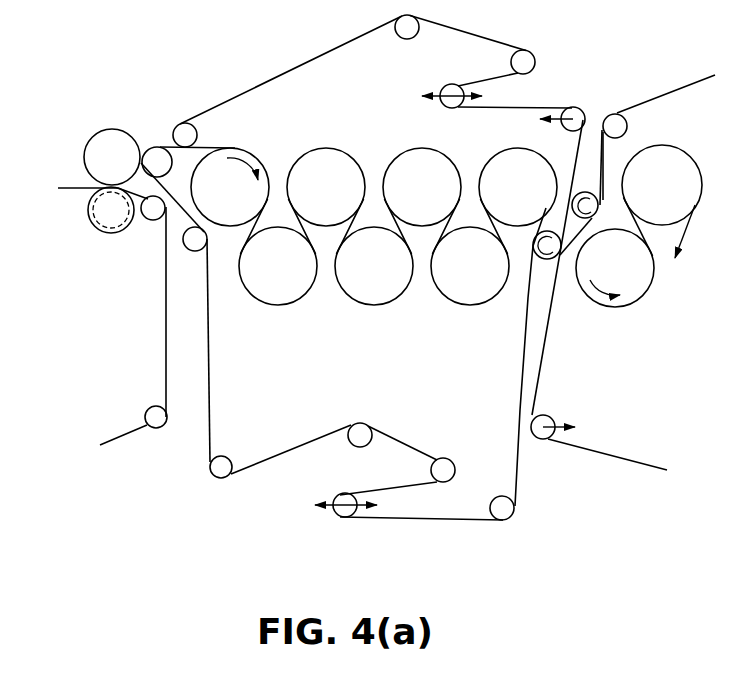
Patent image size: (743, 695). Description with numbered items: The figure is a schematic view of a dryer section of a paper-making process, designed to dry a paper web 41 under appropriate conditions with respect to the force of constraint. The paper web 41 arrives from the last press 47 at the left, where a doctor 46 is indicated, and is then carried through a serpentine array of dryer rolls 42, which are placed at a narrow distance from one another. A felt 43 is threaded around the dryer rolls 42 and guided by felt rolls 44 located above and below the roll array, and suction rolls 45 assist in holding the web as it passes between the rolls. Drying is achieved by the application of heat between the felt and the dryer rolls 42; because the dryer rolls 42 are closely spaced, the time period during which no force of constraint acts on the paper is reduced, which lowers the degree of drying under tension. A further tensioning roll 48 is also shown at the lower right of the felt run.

The paper web 41 is at (60, 187).
The dryer rolls 42 is at (228, 228).
The felt 43 is at (267, 80).
The felt rolls 44 is at (399, 39).
The suction rolls 45 is at (158, 158).
The doctor 46 is at (144, 134).
The last press 47 is at (112, 128).
The tension roller 48 is at (601, 454).